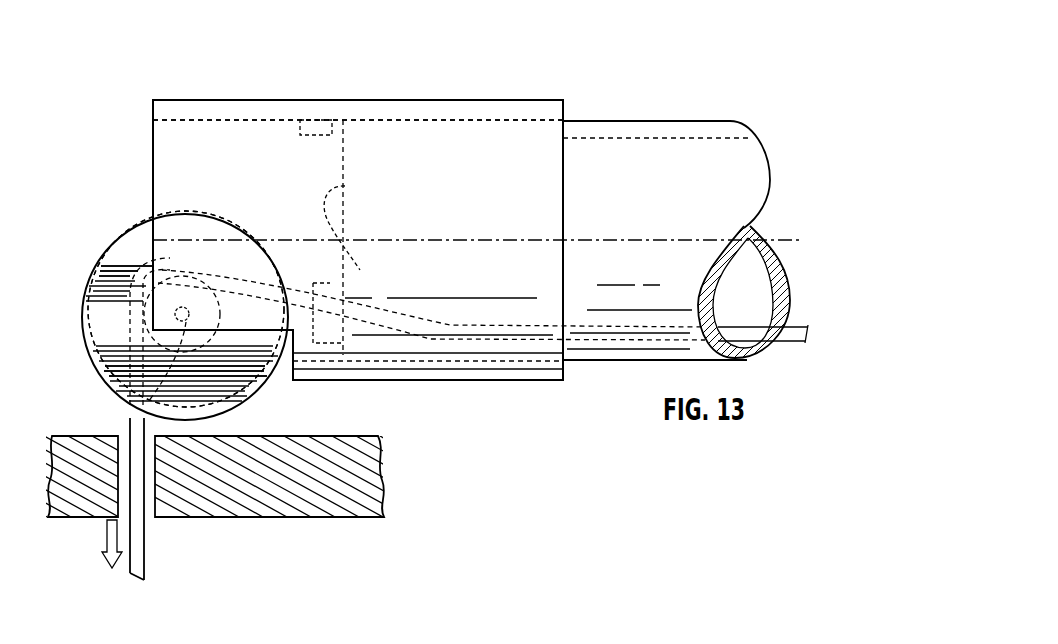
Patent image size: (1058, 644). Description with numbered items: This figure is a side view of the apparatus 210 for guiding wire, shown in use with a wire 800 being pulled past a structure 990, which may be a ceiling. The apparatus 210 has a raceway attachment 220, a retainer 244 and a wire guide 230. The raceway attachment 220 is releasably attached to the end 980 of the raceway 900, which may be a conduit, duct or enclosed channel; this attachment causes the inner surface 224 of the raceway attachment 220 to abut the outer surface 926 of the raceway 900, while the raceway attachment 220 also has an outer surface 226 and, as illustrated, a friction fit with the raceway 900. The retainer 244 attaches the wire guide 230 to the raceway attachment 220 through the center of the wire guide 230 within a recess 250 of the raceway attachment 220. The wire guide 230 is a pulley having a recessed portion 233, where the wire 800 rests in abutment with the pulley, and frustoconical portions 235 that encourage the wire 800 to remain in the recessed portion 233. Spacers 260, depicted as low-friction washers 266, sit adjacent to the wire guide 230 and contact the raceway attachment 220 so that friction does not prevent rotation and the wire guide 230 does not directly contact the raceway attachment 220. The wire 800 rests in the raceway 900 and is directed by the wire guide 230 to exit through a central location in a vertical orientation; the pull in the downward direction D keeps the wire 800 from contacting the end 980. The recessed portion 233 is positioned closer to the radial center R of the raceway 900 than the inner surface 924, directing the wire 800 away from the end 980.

The apparatus 210 is at (163, 75).
The raceway attachment 220 is at (405, 108).
The inner surface 224 is at (397, 120).
The outer surface 226 is at (460, 100).
The wire guide 230 is at (225, 408).
The recessed portion 233 is at (102, 378).
The frustoconical portions 235 is at (100, 255).
The retainer 244 is at (132, 406).
The guide channel 250 is at (318, 118).
The spacers 260 is at (82, 329).
The washers 266 is at (112, 248).
The wire 800 is at (145, 535).
The raceway 900 is at (692, 120).
The inner surface 924 is at (700, 140).
The outer surface 926 is at (650, 118).
The end 980 is at (431, 263).
The structure 990 is at (315, 508).
The downward direction D is at (107, 537).
The radial center R is at (800, 240).